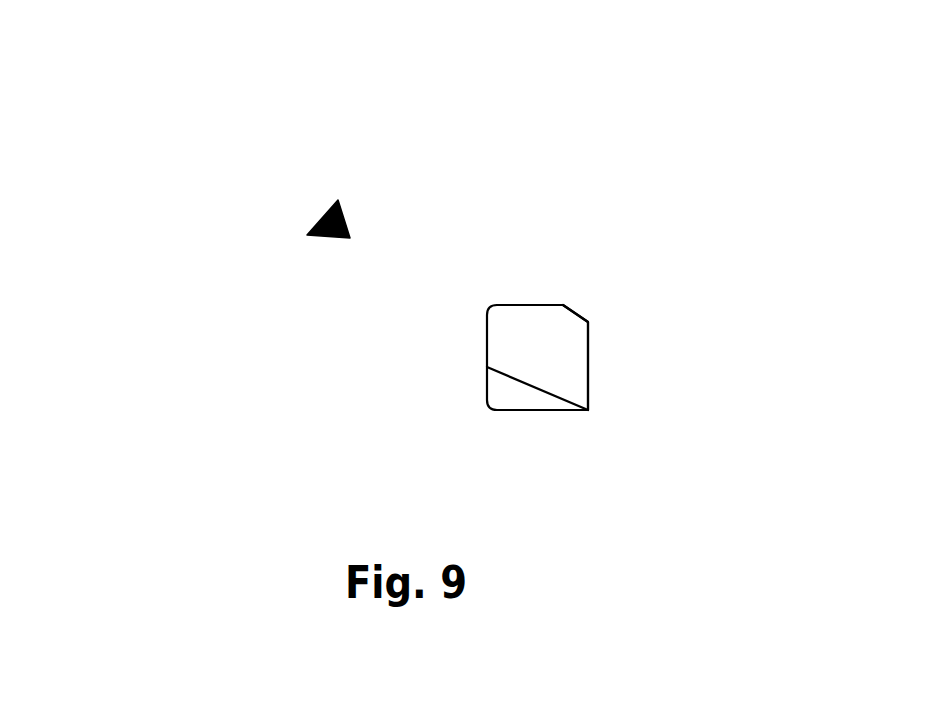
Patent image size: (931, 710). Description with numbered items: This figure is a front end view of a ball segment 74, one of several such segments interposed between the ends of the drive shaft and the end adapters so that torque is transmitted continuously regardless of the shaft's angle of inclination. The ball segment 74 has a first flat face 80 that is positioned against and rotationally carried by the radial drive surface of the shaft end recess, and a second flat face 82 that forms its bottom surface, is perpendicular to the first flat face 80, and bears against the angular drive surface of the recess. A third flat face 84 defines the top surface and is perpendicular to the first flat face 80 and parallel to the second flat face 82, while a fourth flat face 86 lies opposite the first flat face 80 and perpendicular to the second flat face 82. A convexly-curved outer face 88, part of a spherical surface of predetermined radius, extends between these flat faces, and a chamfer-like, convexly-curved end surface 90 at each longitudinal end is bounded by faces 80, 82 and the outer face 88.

The ball segment 74 is at (323, 217).
The first flat face 80 is at (487, 347).
The second flat face 82 is at (545, 410).
The third flat face 84 is at (537, 305).
The fourth flat face 86 is at (590, 362).
The convexly-curved outer face 88 is at (548, 335).
The convexly-curved end surface 90 is at (517, 393).